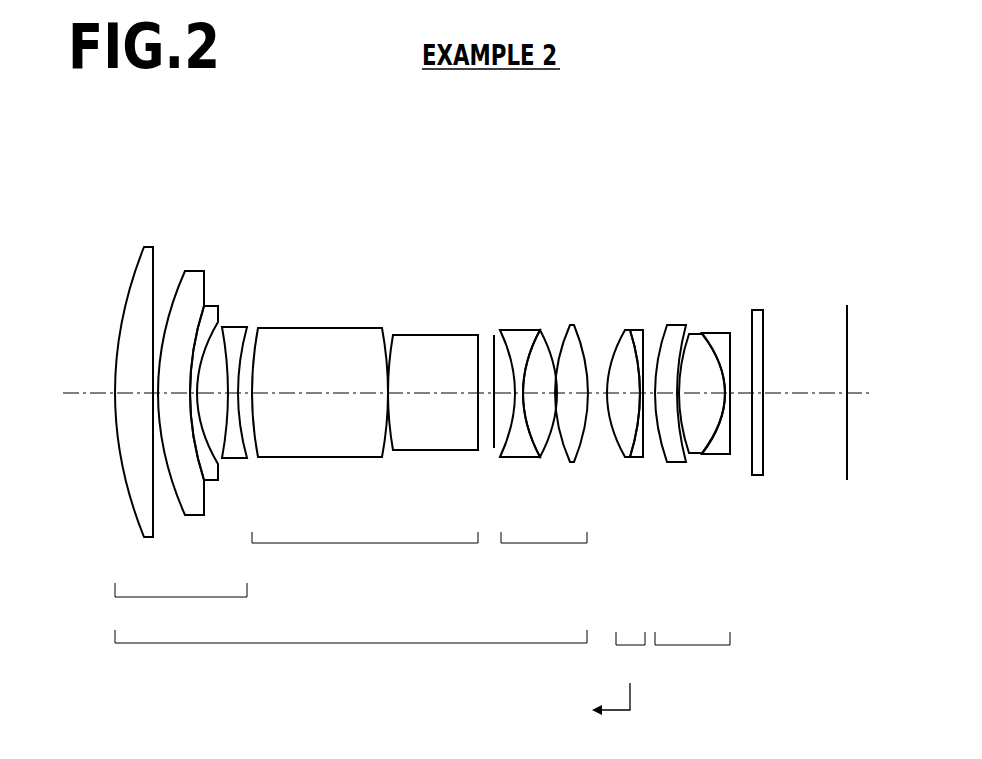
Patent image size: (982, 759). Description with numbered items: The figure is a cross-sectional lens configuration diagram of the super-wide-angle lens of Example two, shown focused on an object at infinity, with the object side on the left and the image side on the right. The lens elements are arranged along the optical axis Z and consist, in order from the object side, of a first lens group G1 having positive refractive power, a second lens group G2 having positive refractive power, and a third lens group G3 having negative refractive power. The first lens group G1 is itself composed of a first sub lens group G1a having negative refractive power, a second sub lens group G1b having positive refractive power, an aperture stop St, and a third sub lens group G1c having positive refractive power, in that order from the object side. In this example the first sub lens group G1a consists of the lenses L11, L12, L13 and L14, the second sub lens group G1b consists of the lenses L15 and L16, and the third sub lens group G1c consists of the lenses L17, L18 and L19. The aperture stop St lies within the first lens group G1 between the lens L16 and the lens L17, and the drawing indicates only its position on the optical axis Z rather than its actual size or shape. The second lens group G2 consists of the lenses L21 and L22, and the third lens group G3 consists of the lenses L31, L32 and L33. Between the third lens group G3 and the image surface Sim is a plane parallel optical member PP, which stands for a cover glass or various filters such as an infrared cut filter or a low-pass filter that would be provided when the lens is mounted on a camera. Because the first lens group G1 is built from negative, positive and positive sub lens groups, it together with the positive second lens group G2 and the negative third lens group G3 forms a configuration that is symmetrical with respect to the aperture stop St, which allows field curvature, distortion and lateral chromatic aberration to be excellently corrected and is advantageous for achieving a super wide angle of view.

The lens L11 is at (150, 246).
The lens L12 is at (198, 270).
The lens L13 is at (210, 305).
The lens L14 is at (233, 326).
The lens L15 is at (323, 327).
The lens L16 is at (412, 334).
The lens L17 is at (518, 329).
The lens L18 is at (541, 329).
The lens L19 is at (573, 324).
The lens L21 is at (625, 329).
The lens L22 is at (637, 329).
The lens L31 is at (677, 324).
The lens L32 is at (697, 333).
The lens L33 is at (722, 332).
The aperture stop St is at (493, 338).
The plane parallel optical member PP is at (758, 309).
The image surface Sim is at (848, 330).
The optical axis Z is at (85, 394).
The first sub lens group G1a is at (181, 604).
The second sub lens group G1b is at (365, 552).
The third sub lens group G1c is at (544, 552).
The first lens group G1 is at (351, 651).
The second lens group G2 is at (630, 653).
The third lens group G3 is at (692, 653).